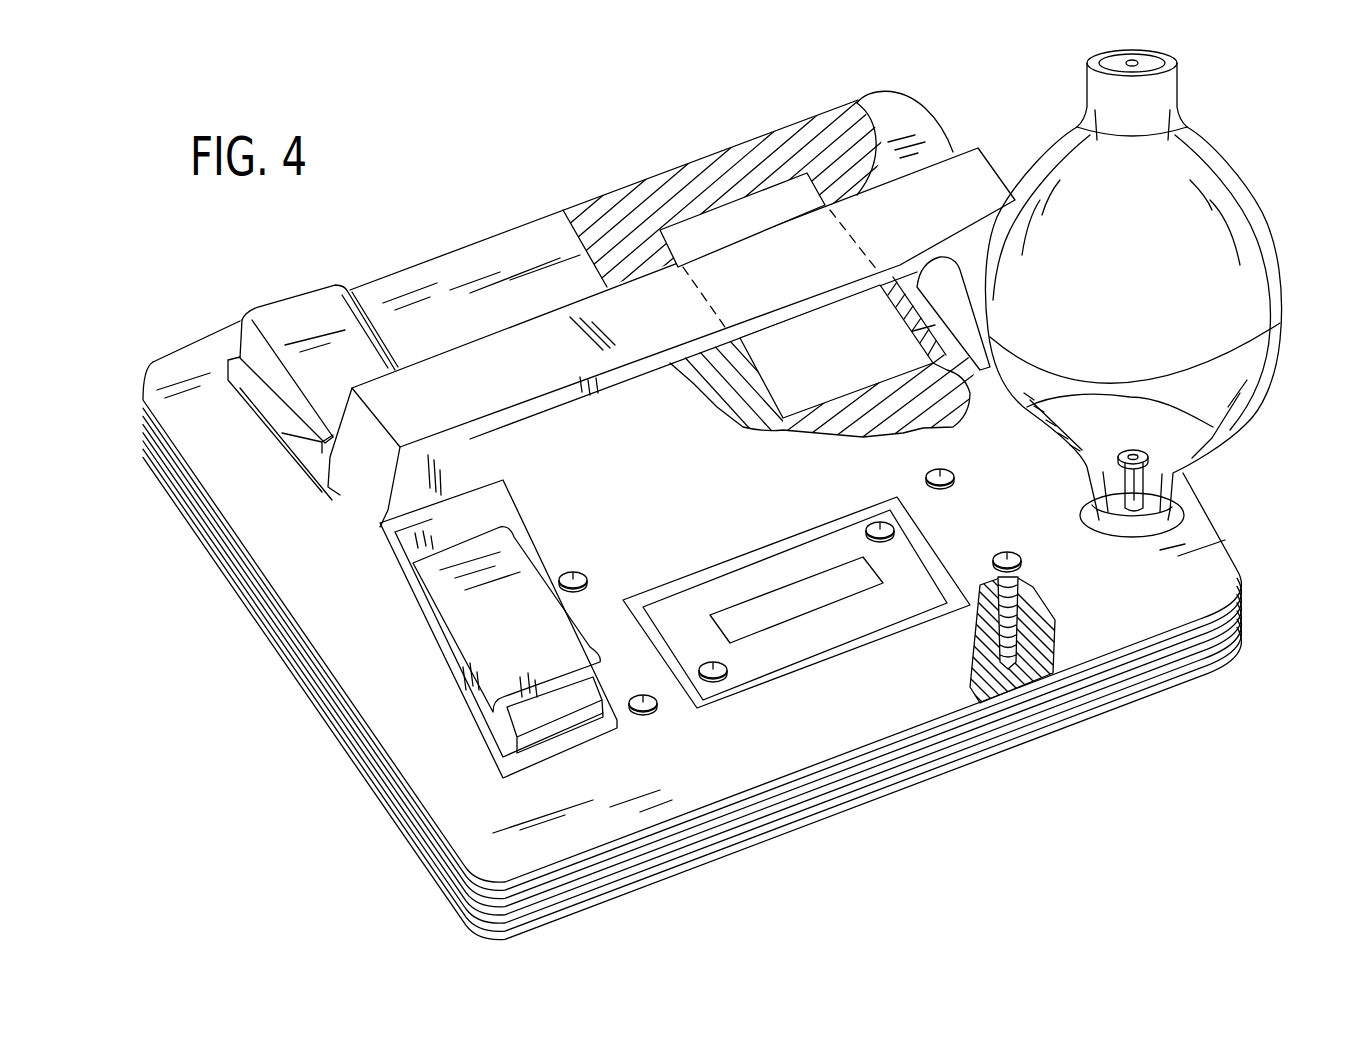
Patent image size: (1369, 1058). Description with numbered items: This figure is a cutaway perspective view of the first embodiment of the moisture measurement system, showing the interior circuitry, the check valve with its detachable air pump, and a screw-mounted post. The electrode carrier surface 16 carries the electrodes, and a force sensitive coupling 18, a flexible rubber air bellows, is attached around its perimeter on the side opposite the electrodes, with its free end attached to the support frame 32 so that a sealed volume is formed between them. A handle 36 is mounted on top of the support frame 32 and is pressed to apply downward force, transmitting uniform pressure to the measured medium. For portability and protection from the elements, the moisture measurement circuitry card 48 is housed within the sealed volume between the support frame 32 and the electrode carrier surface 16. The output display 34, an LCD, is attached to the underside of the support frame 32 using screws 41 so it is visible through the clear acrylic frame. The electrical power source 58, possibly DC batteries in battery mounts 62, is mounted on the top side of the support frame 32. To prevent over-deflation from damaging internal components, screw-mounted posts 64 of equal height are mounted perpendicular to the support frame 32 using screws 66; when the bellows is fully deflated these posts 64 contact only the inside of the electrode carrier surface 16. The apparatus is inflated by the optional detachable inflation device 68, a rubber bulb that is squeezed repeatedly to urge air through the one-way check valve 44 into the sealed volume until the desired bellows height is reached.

The electrode carrier surface 16 is at (730, 630).
The force sensitive coupling 18 is at (1185, 670).
The support frame 32 is at (1217, 573).
The output display 34 is at (809, 617).
The handle 36 is at (507, 353).
The screws 41 is at (723, 667).
The one-way check valve 44 is at (1170, 463).
The moisture measurement circuitry card 48 is at (747, 203).
The electrical power source 58 is at (298, 390).
The battery mounts 62 is at (407, 617).
The screw-mounted posts 64 is at (1040, 617).
The screws 66 is at (928, 472).
The inflation device 68 is at (1250, 247).